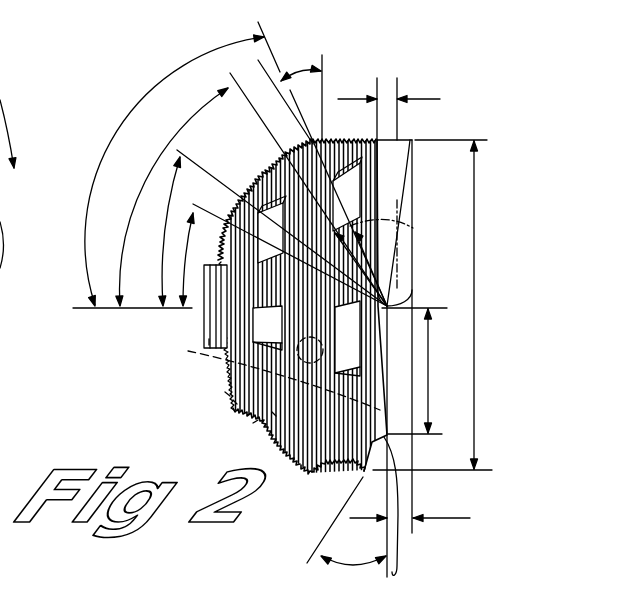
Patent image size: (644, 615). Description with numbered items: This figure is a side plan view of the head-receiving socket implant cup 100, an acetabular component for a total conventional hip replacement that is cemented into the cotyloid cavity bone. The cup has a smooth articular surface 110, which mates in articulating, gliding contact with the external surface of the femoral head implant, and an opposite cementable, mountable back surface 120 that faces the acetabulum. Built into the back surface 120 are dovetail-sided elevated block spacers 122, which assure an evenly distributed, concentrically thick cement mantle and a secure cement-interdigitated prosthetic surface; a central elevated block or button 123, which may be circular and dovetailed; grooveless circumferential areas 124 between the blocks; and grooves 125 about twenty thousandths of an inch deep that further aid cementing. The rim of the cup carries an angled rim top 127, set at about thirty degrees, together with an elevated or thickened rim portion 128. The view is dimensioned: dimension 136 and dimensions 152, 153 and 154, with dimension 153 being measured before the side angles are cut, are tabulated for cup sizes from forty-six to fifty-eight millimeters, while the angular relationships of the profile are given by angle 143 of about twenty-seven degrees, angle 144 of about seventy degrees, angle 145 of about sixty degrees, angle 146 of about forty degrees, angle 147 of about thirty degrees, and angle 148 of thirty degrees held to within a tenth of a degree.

The head-receiving socket implant cup 100 is at (367, 70).
The articular surface 110 is at (260, 369).
The back surface 120 is at (225, 392).
The elevated block spacers 122 is at (233, 400).
The central elevated block or button 123 is at (209, 339).
The grooveless circumferential areas 124 is at (272, 412).
The grooves 125 is at (253, 423).
The rim top 127 is at (418, 519).
The elevated or thickened rim portion 128 is at (413, 182).
The dimension 136 is at (420, 99).
The angle 143 is at (297, 72).
The angle 144 is at (119, 132).
The angle 145 is at (167, 186).
The angle 146 is at (160, 234).
The angle 147 is at (190, 252).
The angle 148 is at (322, 556).
The dimension 152 is at (432, 345).
The dimension 153 is at (478, 433).
The dimension 154 is at (440, 518).